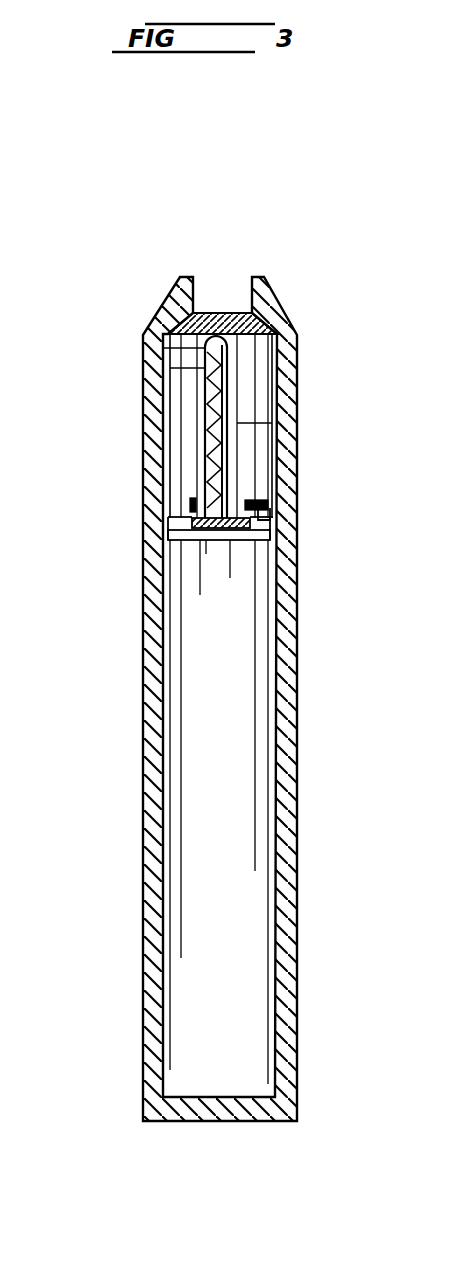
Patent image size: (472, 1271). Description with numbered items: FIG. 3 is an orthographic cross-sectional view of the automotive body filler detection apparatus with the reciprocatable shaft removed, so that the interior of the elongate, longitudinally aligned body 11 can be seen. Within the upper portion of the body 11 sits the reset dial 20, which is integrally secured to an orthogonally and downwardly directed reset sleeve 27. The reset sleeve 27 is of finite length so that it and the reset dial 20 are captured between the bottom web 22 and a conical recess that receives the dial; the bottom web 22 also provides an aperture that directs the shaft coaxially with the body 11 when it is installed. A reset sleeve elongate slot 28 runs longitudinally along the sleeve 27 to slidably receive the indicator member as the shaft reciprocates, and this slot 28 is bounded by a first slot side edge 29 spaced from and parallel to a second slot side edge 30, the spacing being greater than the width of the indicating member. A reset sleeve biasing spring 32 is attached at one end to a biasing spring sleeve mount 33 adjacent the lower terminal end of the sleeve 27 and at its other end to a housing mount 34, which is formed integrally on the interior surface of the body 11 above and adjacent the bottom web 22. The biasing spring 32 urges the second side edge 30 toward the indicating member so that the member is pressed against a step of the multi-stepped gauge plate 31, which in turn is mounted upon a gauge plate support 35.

The body 11 is at (297, 462).
The reset dial 20 is at (220, 313).
The bottom web 22 is at (272, 560).
The reset sleeve 27 is at (226, 348).
The reset sleeve elongate slot 28 is at (230, 351).
The first slot side edge 29 is at (200, 368).
The second slot side edge 30 is at (240, 423).
The multi-stepped gauge plate 31 is at (196, 465).
The reset sleeve biasing spring 32 is at (268, 492).
The biasing spring sleeve mount 33 is at (192, 515).
The housing mount 34 is at (270, 520).
The gauge plate support 35 is at (205, 423).